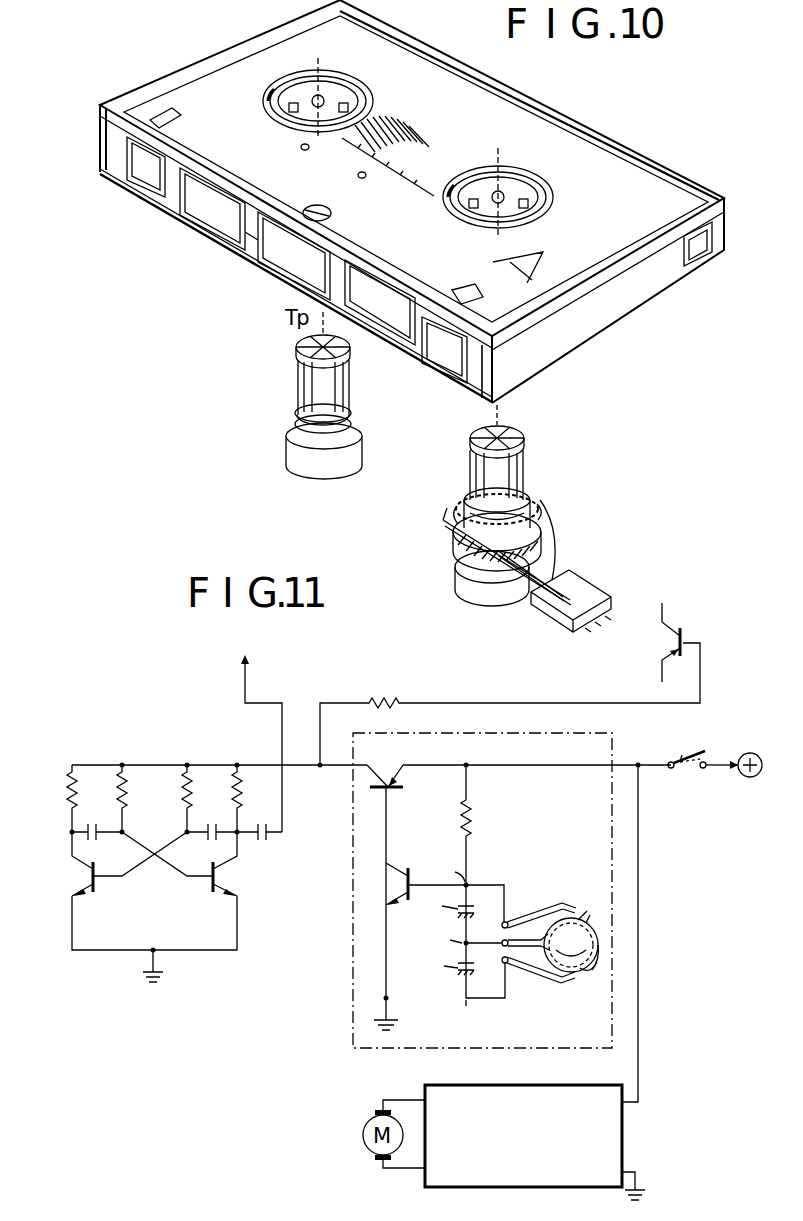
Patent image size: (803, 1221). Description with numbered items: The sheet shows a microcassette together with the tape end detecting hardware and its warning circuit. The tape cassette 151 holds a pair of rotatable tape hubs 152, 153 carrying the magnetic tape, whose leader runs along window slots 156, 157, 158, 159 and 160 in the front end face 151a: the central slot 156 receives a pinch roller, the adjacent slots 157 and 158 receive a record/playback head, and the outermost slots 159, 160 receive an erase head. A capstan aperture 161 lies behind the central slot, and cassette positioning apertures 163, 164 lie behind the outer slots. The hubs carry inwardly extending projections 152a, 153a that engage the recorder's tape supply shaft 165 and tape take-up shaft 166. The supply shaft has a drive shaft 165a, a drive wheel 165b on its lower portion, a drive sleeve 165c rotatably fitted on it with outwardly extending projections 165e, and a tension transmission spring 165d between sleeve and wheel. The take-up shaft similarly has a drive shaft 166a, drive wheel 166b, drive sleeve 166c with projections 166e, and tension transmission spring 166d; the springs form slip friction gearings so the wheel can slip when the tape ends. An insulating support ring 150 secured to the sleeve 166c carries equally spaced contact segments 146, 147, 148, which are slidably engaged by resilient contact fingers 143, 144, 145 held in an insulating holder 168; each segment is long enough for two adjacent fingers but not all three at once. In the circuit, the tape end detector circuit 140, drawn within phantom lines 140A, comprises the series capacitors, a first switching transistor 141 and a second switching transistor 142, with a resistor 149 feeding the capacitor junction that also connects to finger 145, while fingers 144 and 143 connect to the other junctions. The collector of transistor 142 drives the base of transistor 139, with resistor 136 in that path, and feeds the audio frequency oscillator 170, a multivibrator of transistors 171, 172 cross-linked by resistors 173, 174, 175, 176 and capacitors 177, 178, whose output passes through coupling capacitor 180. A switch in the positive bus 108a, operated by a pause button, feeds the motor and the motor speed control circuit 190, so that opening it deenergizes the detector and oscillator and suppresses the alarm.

In FIG. 10, the tape cassette 151 is at (527, 125).
In FIG. 10, the front end face 151a is at (247, 247).
In FIG. 10, the tape hub 152 is at (348, 94).
In FIG. 10, the inwardly extending projections 152a is at (295, 103).
In FIG. 10, the tape hub 153 is at (520, 188).
In FIG. 10, the inwardly extending projections 153a is at (490, 195).
In FIG. 10, the window slot 156 is at (278, 274).
In FIG. 10, the window slot 157 is at (202, 226).
In FIG. 10, the window slot 158 is at (382, 330).
In FIG. 10, the window slot 159 is at (145, 187).
In FIG. 10, the window slot 160 is at (443, 370).
In FIG. 10, the aperture 161 is at (320, 205).
In FIG. 10, the cassette positioning aperture 163 is at (178, 112).
In FIG. 10, the cassette positioning aperture 164 is at (466, 287).
In FIG. 10, the tape supply shaft 165 is at (270, 438).
In FIG. 10, the drive shaft 165a is at (311, 451).
In FIG. 10, the drive wheel 165b is at (324, 463).
In FIG. 10, the drive sleeve 165c is at (348, 378).
In FIG. 10, the tension transmission spring 165d is at (298, 430).
In FIG. 10, the outwardly extending projections 165e is at (297, 398).
In FIG. 10, the tape take-up shaft 166 is at (537, 486).
In FIG. 10, the drive shaft 166a is at (490, 584).
In FIG. 10, the drive wheel 166b is at (462, 580).
In FIG. 10, the drive sleeve 166c is at (510, 473).
In FIG. 10, the tension transmission spring 166d is at (470, 560).
In FIG. 10, the outwardly extending projections 166e is at (477, 470).
In FIG. 10, the contact finger 143 is at (555, 578).
In FIG. 11, the contact finger 143 is at (523, 967).
In FIG. 10, the contact finger 144 is at (540, 570).
In FIG. 11, the contact finger 144 is at (503, 940).
In FIG. 10, the contact finger 145 is at (528, 592).
In FIG. 11, the contact finger 145 is at (530, 912).
In FIG. 10, the contact segment 146 is at (537, 509).
In FIG. 11, the contact segment 146 is at (572, 912).
In FIG. 10, the contact segment 147 is at (456, 512).
In FIG. 11, the contact segment 147 is at (587, 967).
In FIG. 10, the contact segment 148 is at (460, 500).
In FIG. 11, the contact segment 148 is at (600, 966).
In FIG. 10, the support ring 150 is at (535, 513).
In FIG. 11, the support ring 150 is at (580, 942).
In FIG. 10, the holder 168 is at (603, 597).
In FIG. 11, the resistor 136 is at (380, 703).
In FIG. 11, the transistor 139 is at (682, 633).
In FIG. 11, the tape end detector circuit 140 is at (378, 922).
In FIG. 11, the phantom lines 140A is at (430, 1058).
In FIG. 11, the first switching transistor 141 is at (402, 871).
In FIG. 11, the second switching transistor 142 is at (398, 789).
In FIG. 11, the resistor 149 is at (472, 818).
In FIG. 11, the audio frequency oscillator 170 is at (123, 961).
In FIG. 11, the transistor 171 is at (102, 883).
In FIG. 11, the transistor 172 is at (212, 883).
In FIG. 11, the resistor 173 is at (77, 797).
In FIG. 11, the resistor 174 is at (124, 800).
In FIG. 11, the resistor 175 is at (188, 800).
In FIG. 11, the resistor 176 is at (239, 802).
In FIG. 11, the capacitor 177 is at (92, 838).
In FIG. 11, the capacitor 178 is at (212, 842).
In FIG. 11, the coupling capacitor 180 is at (264, 840).
In FIG. 11, the positive bus 108a is at (707, 770).
In FIG. 11, the motor speed control circuit 190 is at (612, 1129).